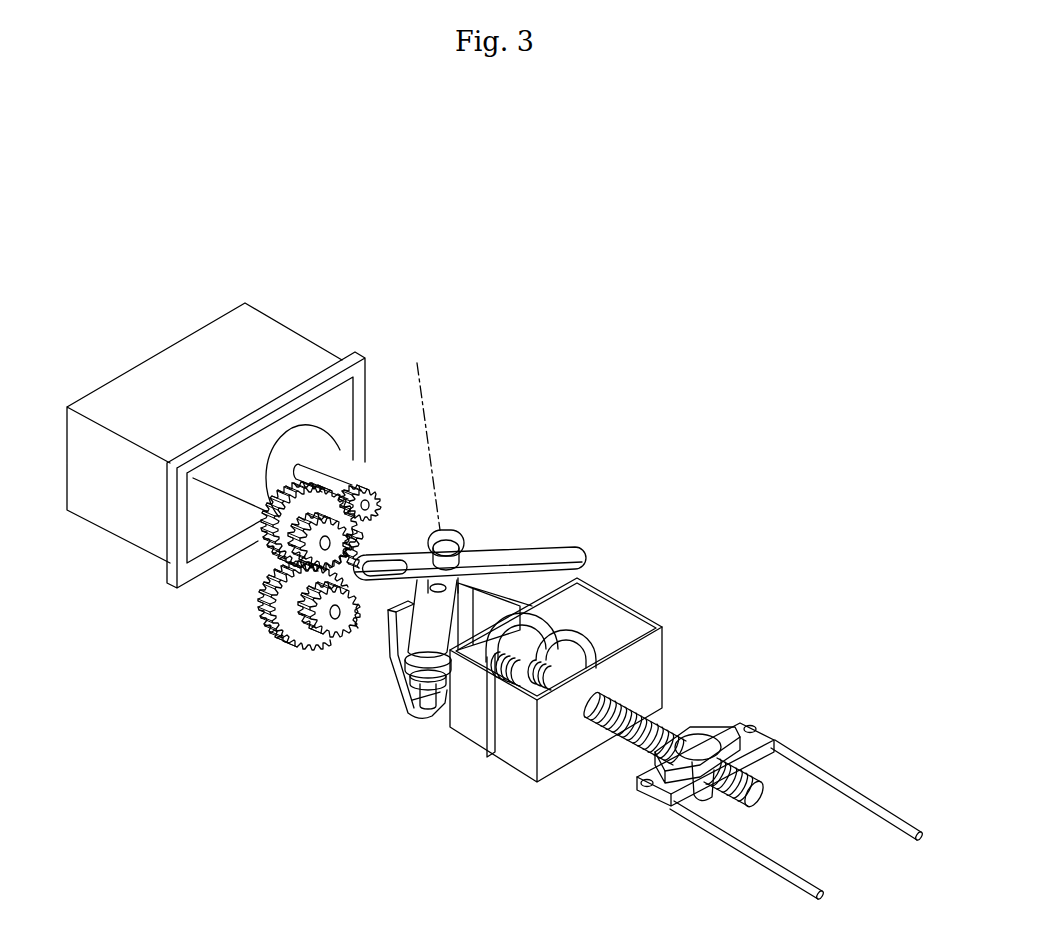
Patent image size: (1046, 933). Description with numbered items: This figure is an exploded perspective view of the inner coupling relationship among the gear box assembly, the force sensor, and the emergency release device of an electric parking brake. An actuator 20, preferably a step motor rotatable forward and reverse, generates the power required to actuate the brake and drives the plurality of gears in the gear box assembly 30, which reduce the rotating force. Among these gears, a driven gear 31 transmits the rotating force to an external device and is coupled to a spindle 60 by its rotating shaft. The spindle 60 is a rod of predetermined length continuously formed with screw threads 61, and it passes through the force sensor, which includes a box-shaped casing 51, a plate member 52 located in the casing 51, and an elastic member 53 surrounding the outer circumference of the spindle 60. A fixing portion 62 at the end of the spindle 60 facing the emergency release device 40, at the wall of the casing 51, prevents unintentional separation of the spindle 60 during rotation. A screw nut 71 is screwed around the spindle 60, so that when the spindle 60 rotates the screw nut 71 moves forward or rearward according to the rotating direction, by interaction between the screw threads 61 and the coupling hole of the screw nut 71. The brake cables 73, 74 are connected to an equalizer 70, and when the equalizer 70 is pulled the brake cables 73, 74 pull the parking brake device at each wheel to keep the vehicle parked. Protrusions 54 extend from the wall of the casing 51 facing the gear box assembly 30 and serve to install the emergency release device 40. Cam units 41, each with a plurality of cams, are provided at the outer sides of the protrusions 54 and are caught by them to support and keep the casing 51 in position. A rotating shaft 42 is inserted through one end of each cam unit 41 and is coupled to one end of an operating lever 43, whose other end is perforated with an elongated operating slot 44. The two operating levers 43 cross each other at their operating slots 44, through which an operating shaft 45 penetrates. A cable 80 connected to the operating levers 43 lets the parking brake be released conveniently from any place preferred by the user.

The actuator 20 is at (327, 447).
The gear box assembly 30 is at (277, 338).
The driven gear 31 is at (397, 527).
The emergency release device 40 is at (505, 533).
The cam unit 41 is at (408, 687).
The rotating shaft 42 is at (427, 698).
The operating lever 43 is at (420, 633).
The operating slot 44 is at (445, 530).
The operating shaft 45 is at (460, 531).
The casing 51 is at (660, 650).
The plate member 52 is at (562, 610).
The elastic member 53 is at (587, 653).
The protrusion 54 is at (540, 585).
The spindle 60 is at (655, 723).
The screw threads 61 is at (597, 723).
The fixing portion 62 is at (483, 687).
The equalizer 70 is at (647, 800).
The screw nut 71 is at (693, 745).
The brake cable 73 is at (780, 873).
The brake cable 74 is at (892, 808).
The cable 80 is at (430, 440).